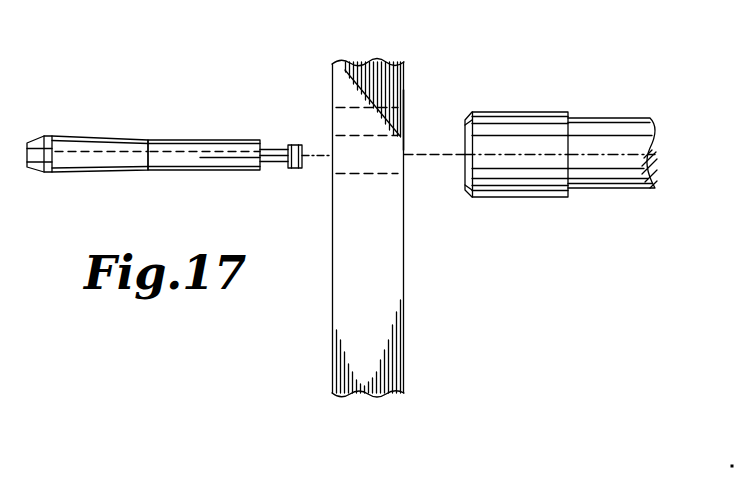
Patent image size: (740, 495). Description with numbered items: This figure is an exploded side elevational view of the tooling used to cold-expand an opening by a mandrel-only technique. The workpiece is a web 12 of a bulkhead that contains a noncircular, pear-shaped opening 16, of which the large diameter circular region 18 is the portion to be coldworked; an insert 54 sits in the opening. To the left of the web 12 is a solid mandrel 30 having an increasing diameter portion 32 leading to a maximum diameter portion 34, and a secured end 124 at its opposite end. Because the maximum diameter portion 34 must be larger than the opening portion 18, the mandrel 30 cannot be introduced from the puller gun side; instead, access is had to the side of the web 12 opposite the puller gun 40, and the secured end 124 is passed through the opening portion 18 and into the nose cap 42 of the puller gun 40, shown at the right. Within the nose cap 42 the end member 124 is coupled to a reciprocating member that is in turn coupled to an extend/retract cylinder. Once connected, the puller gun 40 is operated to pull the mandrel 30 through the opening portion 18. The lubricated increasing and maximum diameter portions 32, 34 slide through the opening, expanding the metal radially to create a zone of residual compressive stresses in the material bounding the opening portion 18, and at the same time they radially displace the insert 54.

The solid mandrel 30 is at (168, 152).
The maximum diameter portion 34 is at (50, 136).
The increasing diameter portion 32 is at (126, 142).
The secured end 124 is at (294, 144).
The web 12 is at (382, 211).
The noncircular opening 16 is at (338, 160).
The insert 54 is at (366, 120).
The large diameter circular region 18 is at (392, 150).
The nose cap 42 is at (521, 198).
The puller gun 40 is at (600, 198).